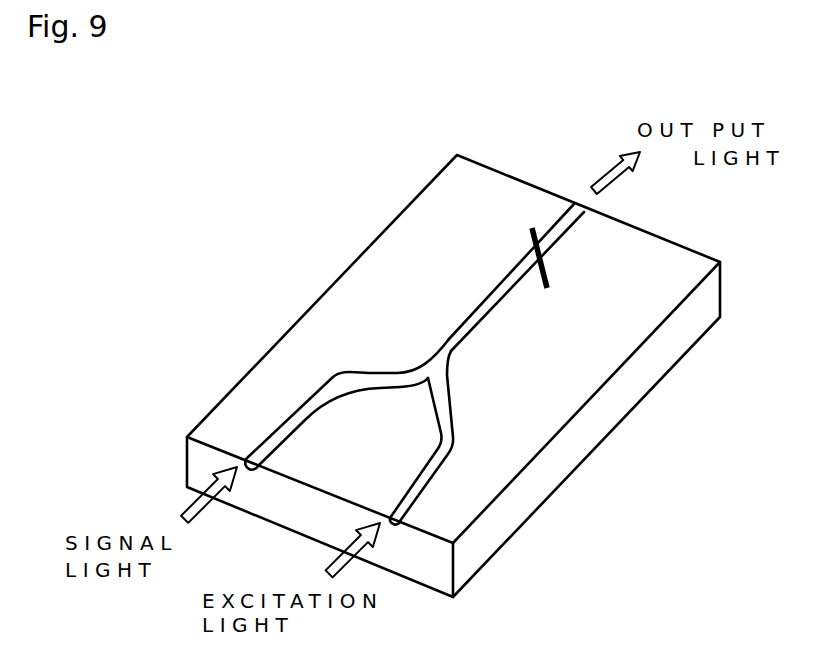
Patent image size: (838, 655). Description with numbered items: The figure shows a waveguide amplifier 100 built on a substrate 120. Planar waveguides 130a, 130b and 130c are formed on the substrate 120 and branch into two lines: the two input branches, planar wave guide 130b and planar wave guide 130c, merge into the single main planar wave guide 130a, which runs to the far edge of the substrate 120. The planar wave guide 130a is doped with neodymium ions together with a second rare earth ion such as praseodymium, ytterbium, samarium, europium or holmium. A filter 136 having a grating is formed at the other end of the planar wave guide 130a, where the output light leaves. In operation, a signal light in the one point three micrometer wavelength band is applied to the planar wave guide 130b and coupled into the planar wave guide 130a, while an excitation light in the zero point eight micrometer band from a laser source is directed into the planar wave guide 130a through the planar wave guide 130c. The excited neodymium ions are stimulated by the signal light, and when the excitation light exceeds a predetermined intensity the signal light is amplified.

The waveguide amplifier 100 is at (396, 182).
The substrate 120 is at (598, 430).
The planar wave guide 130a is at (470, 327).
The planar wave guide 130b is at (290, 425).
The planar wave guide 130c is at (445, 448).
The filter 136 is at (548, 272).